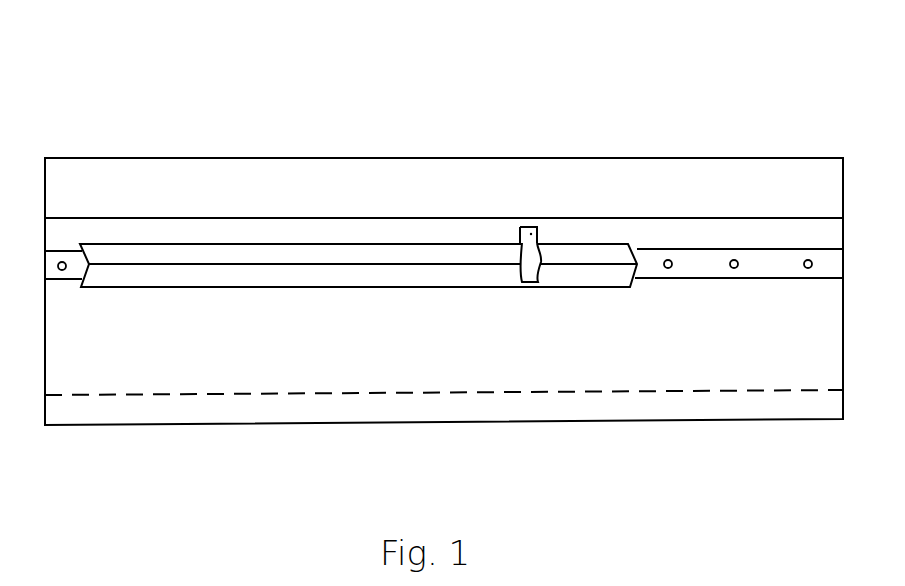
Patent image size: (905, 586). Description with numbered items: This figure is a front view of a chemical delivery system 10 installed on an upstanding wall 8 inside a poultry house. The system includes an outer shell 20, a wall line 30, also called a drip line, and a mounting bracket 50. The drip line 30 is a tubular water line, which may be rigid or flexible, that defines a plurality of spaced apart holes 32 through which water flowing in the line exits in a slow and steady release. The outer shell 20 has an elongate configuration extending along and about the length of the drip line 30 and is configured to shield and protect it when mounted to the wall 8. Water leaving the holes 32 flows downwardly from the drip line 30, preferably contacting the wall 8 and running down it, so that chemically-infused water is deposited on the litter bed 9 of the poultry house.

The upstanding wall 8 is at (131, 342).
The litter bed 9 is at (596, 405).
The chemical delivery system 10 is at (680, 78).
The outer shell 20 is at (158, 257).
The wall line 30 is at (56, 256).
The spaced apart holes 32 is at (734, 260).
The mounting bracket 50 is at (541, 246).